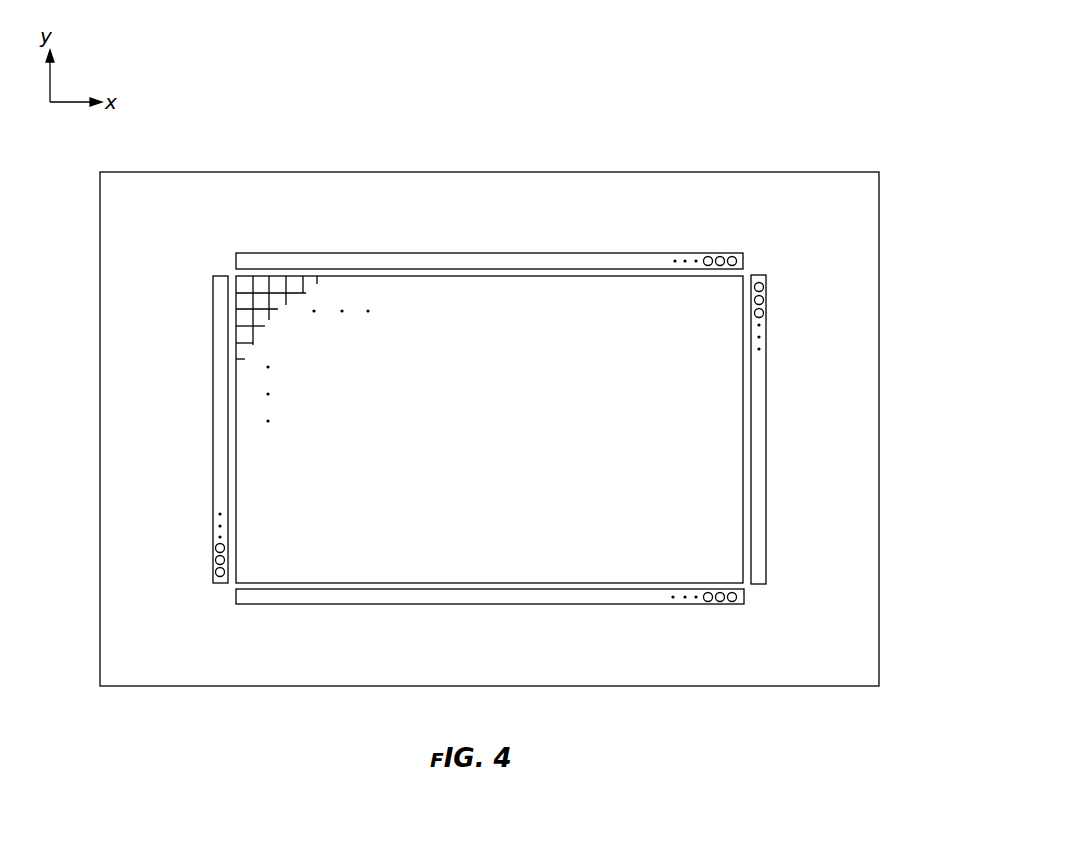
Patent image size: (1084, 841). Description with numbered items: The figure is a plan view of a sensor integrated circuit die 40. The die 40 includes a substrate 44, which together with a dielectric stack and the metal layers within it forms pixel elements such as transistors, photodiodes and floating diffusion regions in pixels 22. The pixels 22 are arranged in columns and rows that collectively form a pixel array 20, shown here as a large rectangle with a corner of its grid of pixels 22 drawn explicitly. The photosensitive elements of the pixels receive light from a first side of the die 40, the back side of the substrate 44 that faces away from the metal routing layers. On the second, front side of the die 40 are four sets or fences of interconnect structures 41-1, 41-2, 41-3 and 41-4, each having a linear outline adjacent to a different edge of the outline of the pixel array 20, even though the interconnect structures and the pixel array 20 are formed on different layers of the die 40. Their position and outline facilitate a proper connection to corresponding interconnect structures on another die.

The sensor integrated circuit die 40 is at (812, 88).
The substrate 44 is at (880, 227).
The pixel array 20 is at (584, 456).
The pixels 22 is at (273, 282).
The interconnect structures 41-1 is at (726, 252).
The interconnect structures 41-2 is at (213, 444).
The interconnect structures 41-3 is at (689, 605).
The interconnect structures 41-4 is at (766, 328).